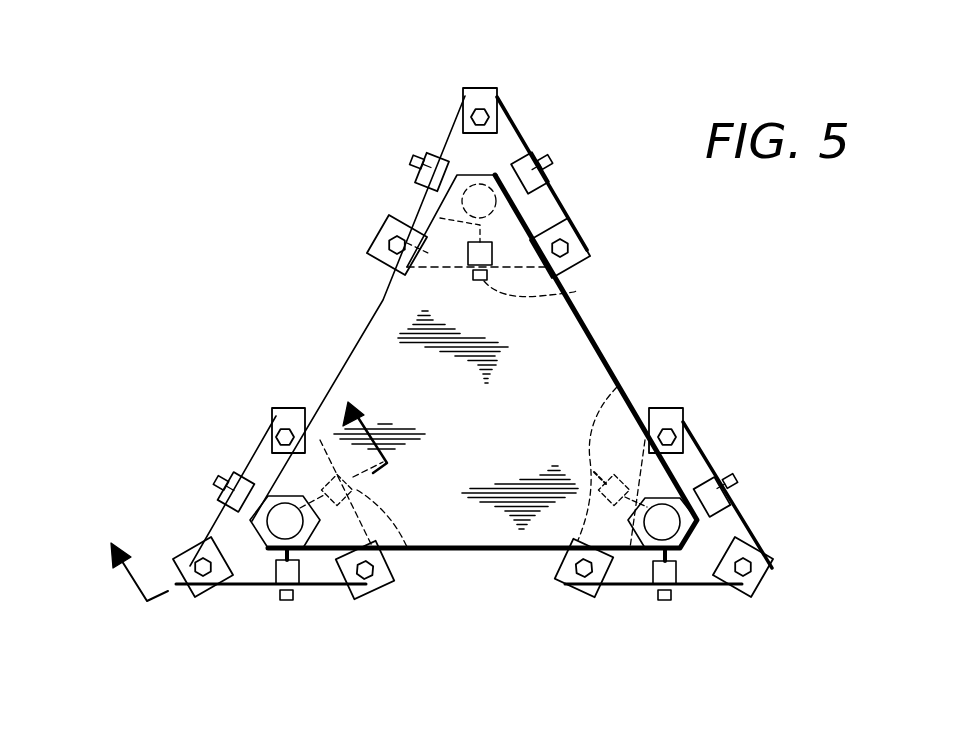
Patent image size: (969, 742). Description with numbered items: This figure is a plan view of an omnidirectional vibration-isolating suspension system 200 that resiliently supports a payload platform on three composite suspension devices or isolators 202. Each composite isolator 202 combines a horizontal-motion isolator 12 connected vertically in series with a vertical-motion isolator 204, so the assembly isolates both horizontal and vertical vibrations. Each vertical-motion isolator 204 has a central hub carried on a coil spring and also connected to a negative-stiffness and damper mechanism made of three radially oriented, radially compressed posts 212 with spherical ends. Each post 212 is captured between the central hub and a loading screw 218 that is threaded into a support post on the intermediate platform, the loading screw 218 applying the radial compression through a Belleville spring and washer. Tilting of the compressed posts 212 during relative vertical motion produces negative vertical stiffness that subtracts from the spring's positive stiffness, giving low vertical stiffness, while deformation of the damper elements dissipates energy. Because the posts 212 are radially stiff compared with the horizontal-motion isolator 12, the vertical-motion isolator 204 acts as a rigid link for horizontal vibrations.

The horizontal-motion isolator 12 is at (556, 196).
The omnidirectional vibration-isolating suspension system 200 is at (352, 297).
The composite suspension device 202 is at (516, 80).
The vertical-motion isolator 204 is at (441, 136).
The radially oriented post 212 is at (510, 178).
The loading screw 218 is at (412, 162).